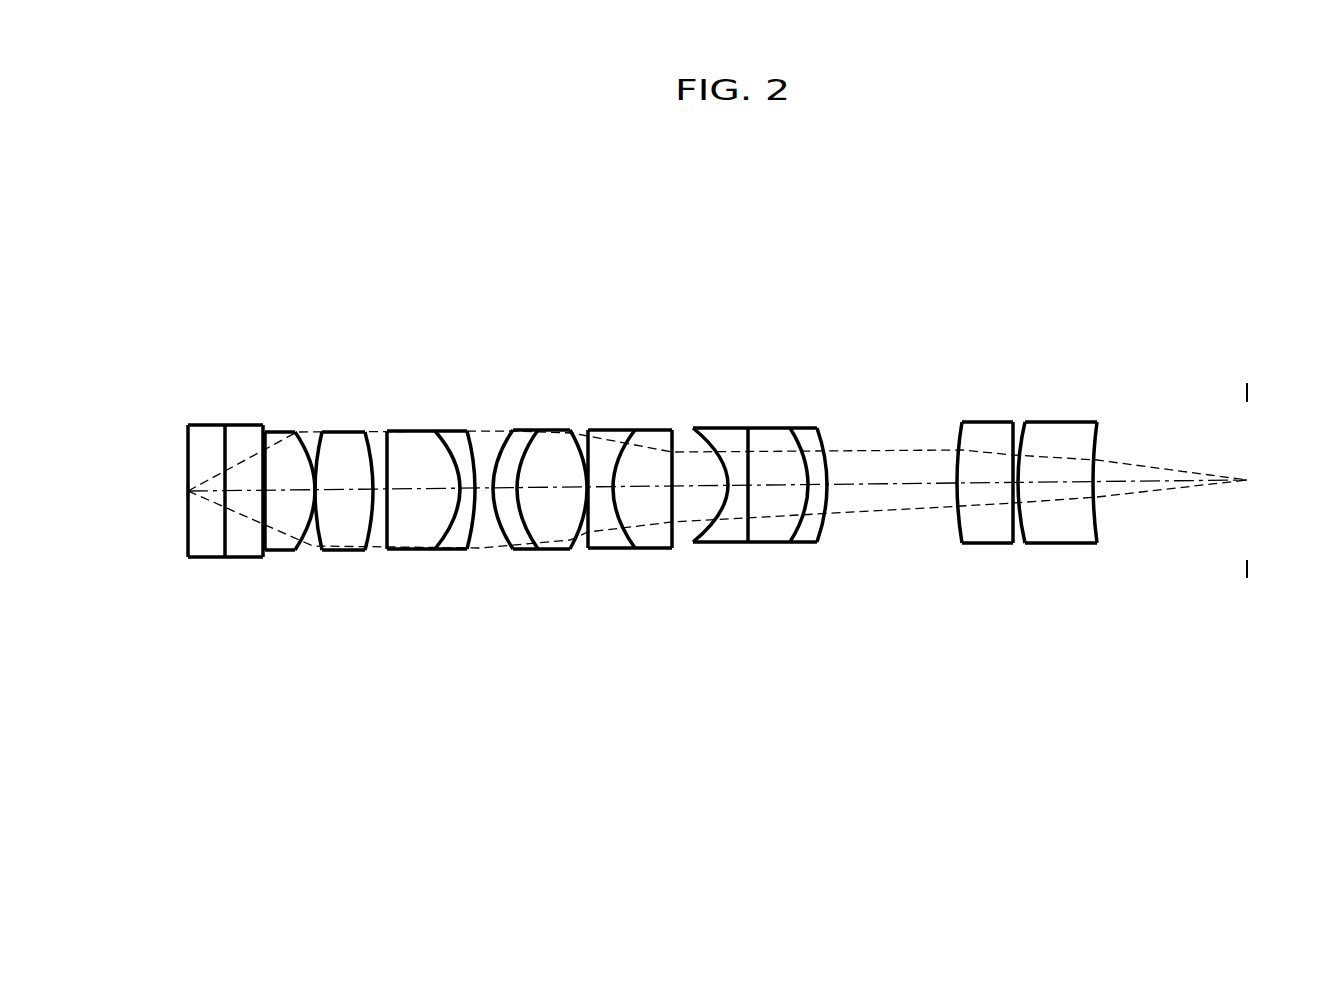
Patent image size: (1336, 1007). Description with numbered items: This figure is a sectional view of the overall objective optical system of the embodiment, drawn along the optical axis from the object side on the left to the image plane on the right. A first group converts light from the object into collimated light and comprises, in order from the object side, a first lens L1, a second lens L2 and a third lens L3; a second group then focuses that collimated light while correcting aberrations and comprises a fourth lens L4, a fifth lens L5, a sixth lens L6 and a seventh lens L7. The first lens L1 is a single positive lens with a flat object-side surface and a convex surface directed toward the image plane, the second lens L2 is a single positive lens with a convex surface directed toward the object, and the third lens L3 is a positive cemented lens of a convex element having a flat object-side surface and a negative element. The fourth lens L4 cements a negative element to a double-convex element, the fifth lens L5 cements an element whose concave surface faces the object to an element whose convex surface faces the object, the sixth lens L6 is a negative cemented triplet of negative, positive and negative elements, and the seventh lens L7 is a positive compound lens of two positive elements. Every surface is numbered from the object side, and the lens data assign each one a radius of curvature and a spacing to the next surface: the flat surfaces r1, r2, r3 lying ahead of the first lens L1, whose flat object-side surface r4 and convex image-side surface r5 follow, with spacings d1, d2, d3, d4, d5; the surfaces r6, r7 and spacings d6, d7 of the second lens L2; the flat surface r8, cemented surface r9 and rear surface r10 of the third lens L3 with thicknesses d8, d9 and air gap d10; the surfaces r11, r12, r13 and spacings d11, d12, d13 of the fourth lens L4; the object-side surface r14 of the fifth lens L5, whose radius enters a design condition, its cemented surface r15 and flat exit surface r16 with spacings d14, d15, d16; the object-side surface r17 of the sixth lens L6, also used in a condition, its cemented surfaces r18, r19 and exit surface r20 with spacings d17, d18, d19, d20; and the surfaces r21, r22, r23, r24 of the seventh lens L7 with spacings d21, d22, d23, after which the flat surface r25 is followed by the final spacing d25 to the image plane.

The first lens L1 is at (283, 282).
The second lens L2 is at (349, 282).
The third lens L3 is at (418, 282).
The fourth lens L4 is at (522, 282).
The fifth lens L5 is at (616, 282).
The sixth lens L6 is at (732, 282).
The seventh lens L7 is at (1100, 319).
The first surface radius of curvature r1 is at (188, 540).
The second surface radius of curvature r2 is at (226, 545).
The third surface radius of curvature r3 is at (264, 557).
The fourth surface radius of curvature r4 is at (262, 545).
The fifth surface radius of curvature r5 is at (300, 548).
The sixth surface radius of curvature r6 is at (320, 548).
The seventh surface radius of curvature r7 is at (370, 548).
The eighth surface radius of curvature r8 is at (387, 550).
The ninth surface radius of curvature r9 is at (440, 548).
The tenth surface radius of curvature r10 is at (470, 548).
The eleventh surface radius of curvature r11 is at (508, 548).
The twelfth surface radius of curvature r12 is at (535, 548).
The thirteenth surface radius of curvature r13 is at (572, 548).
The fourteenth surface radius of curvature r14 is at (588, 548).
The fifteenth surface radius of curvature r15 is at (632, 547).
The sixteenth surface radius of curvature r16 is at (673, 547).
The seventeenth surface radius of curvature r17 is at (693, 541).
The eighteenth surface radius of curvature r18 is at (748, 541).
The nineteenth surface radius of curvature r19 is at (793, 541).
The twentieth surface radius of curvature r20 is at (822, 540).
The twenty-first surface radius of curvature r21 is at (962, 542).
The twenty-second surface radius of curvature r22 is at (1016, 542).
The twenty-third surface radius of curvature r23 is at (1022, 542).
The twenty-fourth surface radius of curvature r24 is at (1098, 542).
The twenty-fifth surface radius of curvature r25 is at (1250, 568).
The first intersurface spacing d1 is at (206, 491).
The second intersurface spacing d2 is at (244, 491).
The third intersurface spacing d3 is at (270, 490).
The fourth intersurface spacing d4 is at (288, 490).
The fifth intersurface spacing d5 is at (315, 490).
The sixth intersurface spacing d6 is at (342, 490).
The seventh intersurface spacing d7 is at (379, 489).
The eighth intersurface spacing d8 is at (415, 489).
The ninth intersurface spacing d9 is at (466, 488).
The tenth intersurface spacing d10 is at (485, 488).
The eleventh intersurface spacing d11 is at (507, 488).
The twelfth intersurface spacing d12 is at (556, 488).
The thirteenth intersurface spacing d13 is at (588, 487).
The fourteenth intersurface spacing d14 is at (604, 487).
The fifteenth intersurface spacing d15 is at (647, 487).
The sixteenth intersurface spacing d16 is at (698, 486).
The seventeenth intersurface spacing d17 is at (738, 485).
The eighteenth intersurface spacing d18 is at (777, 485).
The nineteenth intersurface spacing d19 is at (818, 485).
The twentieth intersurface spacing d20 is at (870, 484).
The twenty-first intersurface spacing d21 is at (987, 482).
The twenty-second intersurface spacing d22 is at (1016, 482).
The twenty-third intersurface spacing d23 is at (1064, 482).
The twenty-fifth intersurface spacing d25 is at (1177, 480).